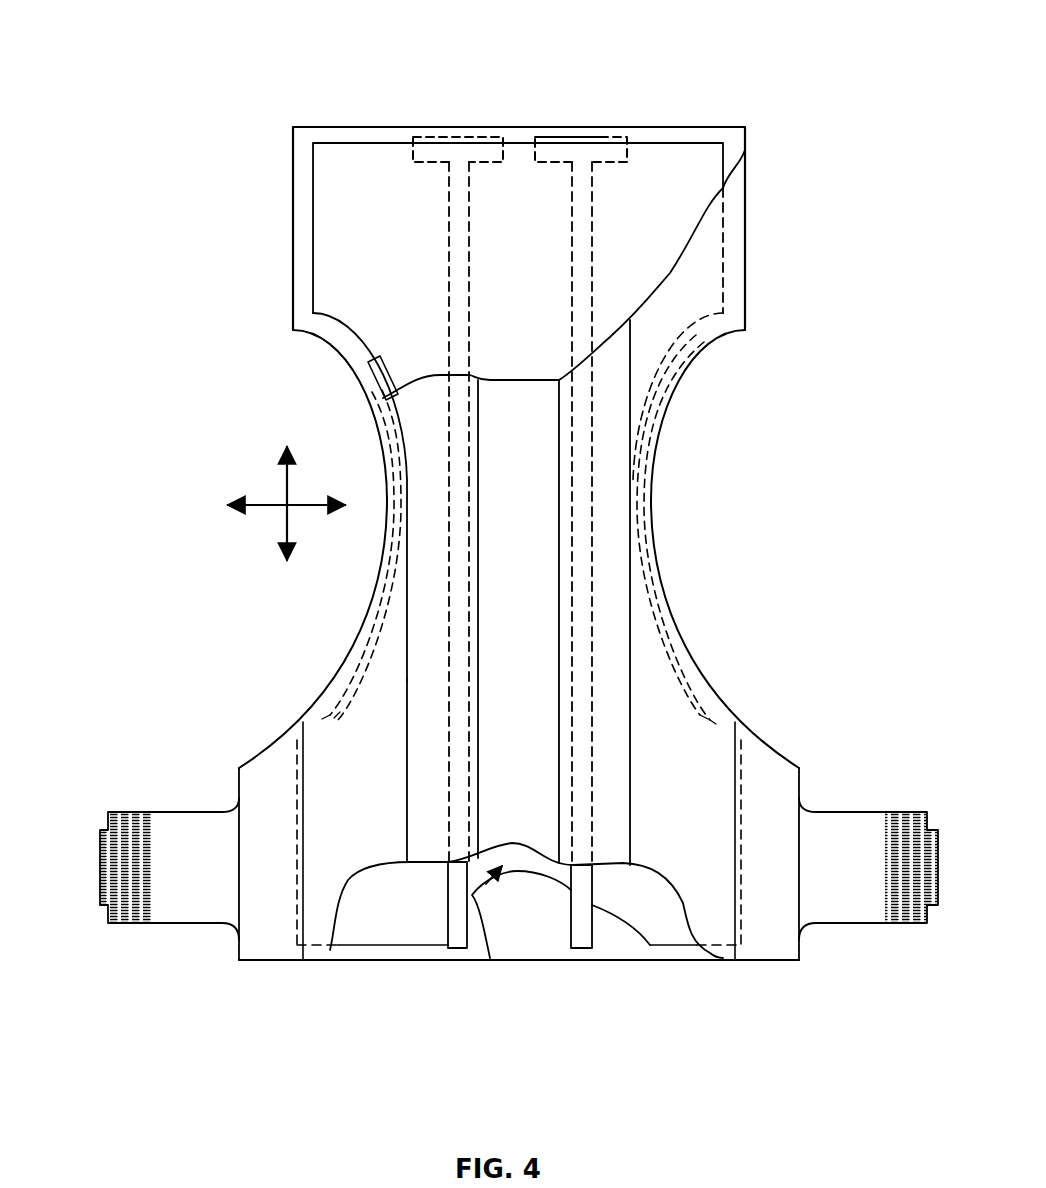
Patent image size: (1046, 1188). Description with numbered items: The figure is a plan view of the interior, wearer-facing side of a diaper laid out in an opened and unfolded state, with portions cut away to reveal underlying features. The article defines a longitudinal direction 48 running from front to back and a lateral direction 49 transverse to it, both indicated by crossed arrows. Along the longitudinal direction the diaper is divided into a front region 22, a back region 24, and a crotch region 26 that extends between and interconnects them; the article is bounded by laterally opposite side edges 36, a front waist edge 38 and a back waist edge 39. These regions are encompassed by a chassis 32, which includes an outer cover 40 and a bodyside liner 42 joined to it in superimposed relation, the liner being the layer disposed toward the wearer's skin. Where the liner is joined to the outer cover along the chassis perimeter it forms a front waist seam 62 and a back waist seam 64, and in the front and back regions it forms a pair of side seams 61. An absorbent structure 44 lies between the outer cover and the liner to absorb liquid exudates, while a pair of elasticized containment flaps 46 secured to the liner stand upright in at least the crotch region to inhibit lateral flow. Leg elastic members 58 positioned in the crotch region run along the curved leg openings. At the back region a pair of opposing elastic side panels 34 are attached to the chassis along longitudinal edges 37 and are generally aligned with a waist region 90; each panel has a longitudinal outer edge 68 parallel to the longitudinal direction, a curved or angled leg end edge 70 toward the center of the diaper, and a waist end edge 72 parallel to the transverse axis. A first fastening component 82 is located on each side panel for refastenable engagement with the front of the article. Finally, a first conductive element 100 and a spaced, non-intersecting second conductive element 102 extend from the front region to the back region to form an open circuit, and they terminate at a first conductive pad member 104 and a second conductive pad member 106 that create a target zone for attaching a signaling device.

The front region 22 is at (527, 250).
The back region 24 is at (536, 797).
The crotch region 26 is at (533, 519).
The chassis 32 is at (412, 636).
The elastic side panels 34 is at (277, 940).
The side edges 36 is at (374, 590).
The longitudinal edges 37 is at (310, 845).
The front waist edge 38 is at (353, 127).
The back waist edge 39 is at (382, 962).
The outer cover 40 is at (500, 950).
The bodyside liner 42 is at (708, 832).
The absorbent structure 44 is at (655, 160).
The containment flaps 46 is at (410, 708).
The longitudinal direction 48 is at (292, 480).
The lateral direction 49 is at (307, 507).
The leg elastic members 58 is at (388, 370).
The side seams 61 is at (285, 745).
The front waist seam 62 is at (540, 130).
The back waist seam 64 is at (605, 955).
The longitudinal outer edge 68 is at (240, 893).
The leg end edge 70 is at (265, 757).
The waist end edges 72 is at (755, 962).
The first fastening components 82 is at (135, 828).
The waist region 90 is at (487, 948).
The first conductive element 100 is at (478, 548).
The second conductive element 102 is at (592, 462).
The first conductive pad member 104 is at (447, 135).
The second conductive pad member 106 is at (607, 135).